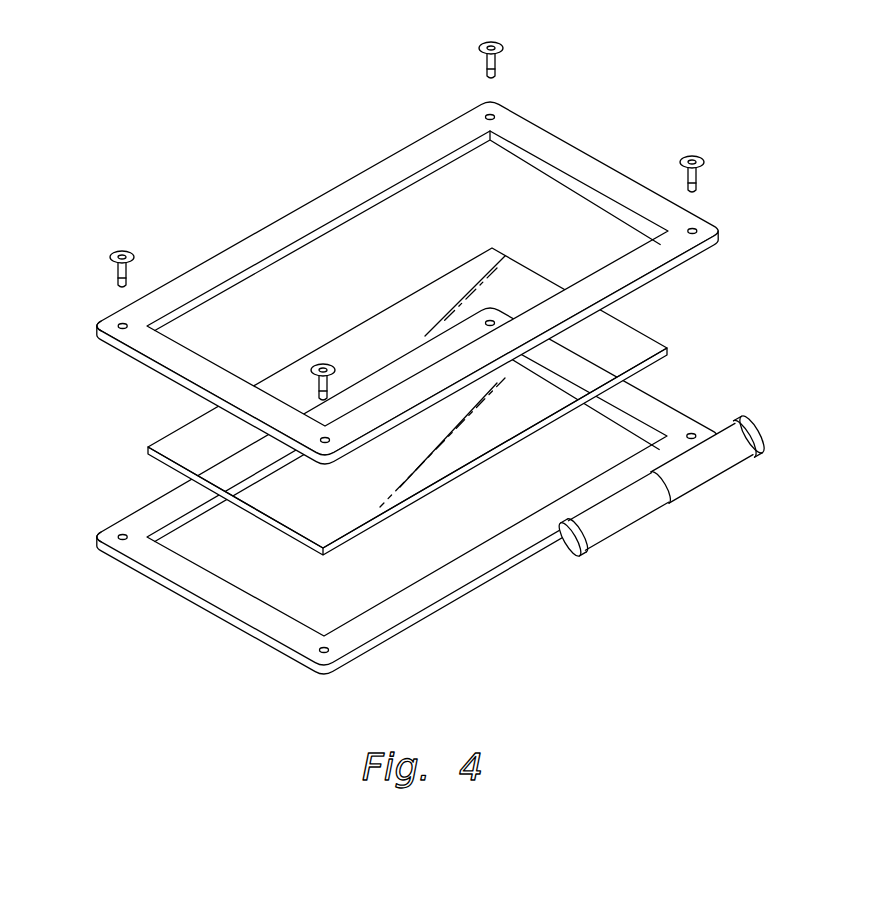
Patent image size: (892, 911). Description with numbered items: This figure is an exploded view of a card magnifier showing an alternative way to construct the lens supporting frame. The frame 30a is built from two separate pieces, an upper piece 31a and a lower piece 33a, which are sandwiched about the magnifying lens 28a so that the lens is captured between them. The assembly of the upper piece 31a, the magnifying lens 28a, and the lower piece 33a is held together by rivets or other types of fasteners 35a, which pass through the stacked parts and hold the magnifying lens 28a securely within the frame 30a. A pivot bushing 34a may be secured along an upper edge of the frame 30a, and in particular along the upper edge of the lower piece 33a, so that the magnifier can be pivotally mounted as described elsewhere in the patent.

The magnifying lens 28a is at (193, 420).
The frame 30a is at (95, 336).
The upper piece 31a is at (358, 170).
The lower piece 33a is at (460, 604).
The pivot bushing 34a is at (622, 533).
The fasteners 35a is at (479, 49).